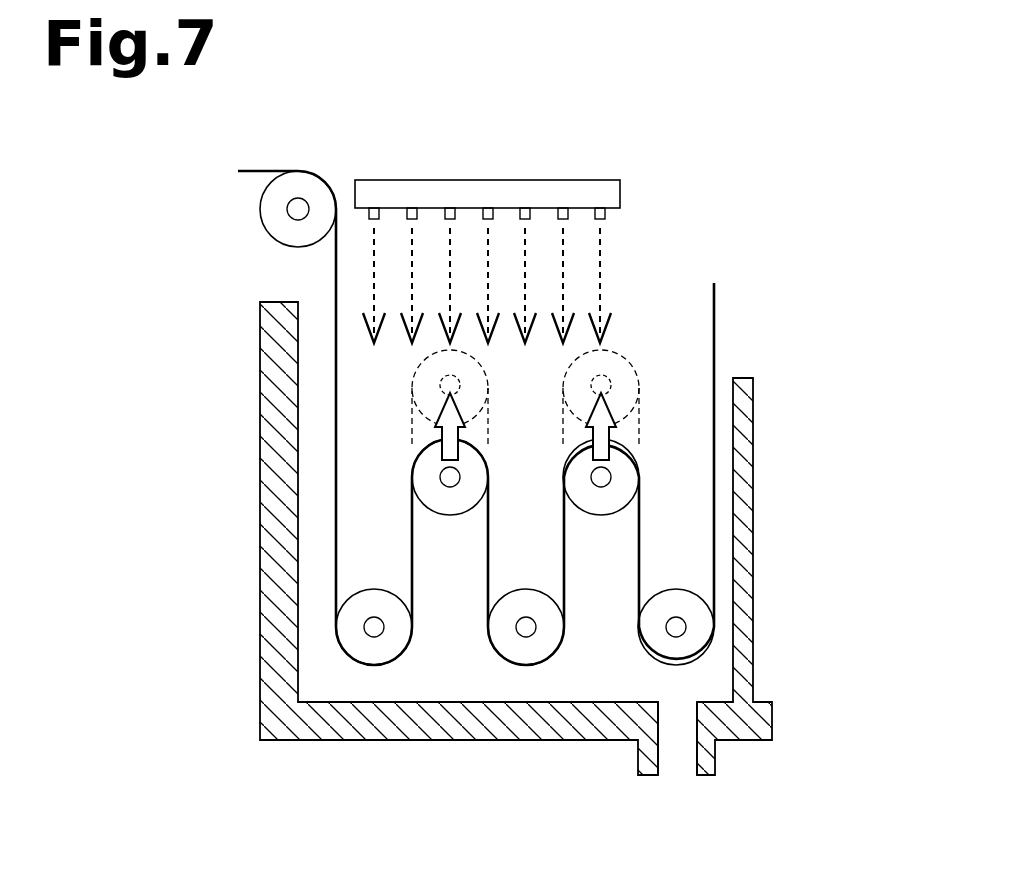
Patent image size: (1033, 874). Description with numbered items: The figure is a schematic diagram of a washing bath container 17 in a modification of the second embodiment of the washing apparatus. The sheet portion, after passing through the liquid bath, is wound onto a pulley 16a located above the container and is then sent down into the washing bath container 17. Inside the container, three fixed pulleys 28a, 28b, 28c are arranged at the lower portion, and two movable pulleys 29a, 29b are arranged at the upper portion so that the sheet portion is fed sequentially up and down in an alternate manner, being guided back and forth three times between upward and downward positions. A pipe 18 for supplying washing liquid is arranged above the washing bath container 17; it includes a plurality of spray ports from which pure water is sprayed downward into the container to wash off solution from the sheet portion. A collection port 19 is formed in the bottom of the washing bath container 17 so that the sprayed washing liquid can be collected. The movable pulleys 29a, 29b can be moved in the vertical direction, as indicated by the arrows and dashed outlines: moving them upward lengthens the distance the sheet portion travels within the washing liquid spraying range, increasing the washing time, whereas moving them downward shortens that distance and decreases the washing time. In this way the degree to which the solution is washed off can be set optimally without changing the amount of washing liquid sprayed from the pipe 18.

The pulley 16a is at (264, 221).
The washing bath container 17 is at (304, 532).
The pipe 18 is at (620, 195).
The collection port 19 is at (660, 770).
The fixed pulley 28a is at (374, 650).
The fixed pulley 28b is at (525, 650).
The fixed pulley 28c is at (698, 640).
The movable pulley 29a is at (450, 503).
The movable pulley 29b is at (601, 503).